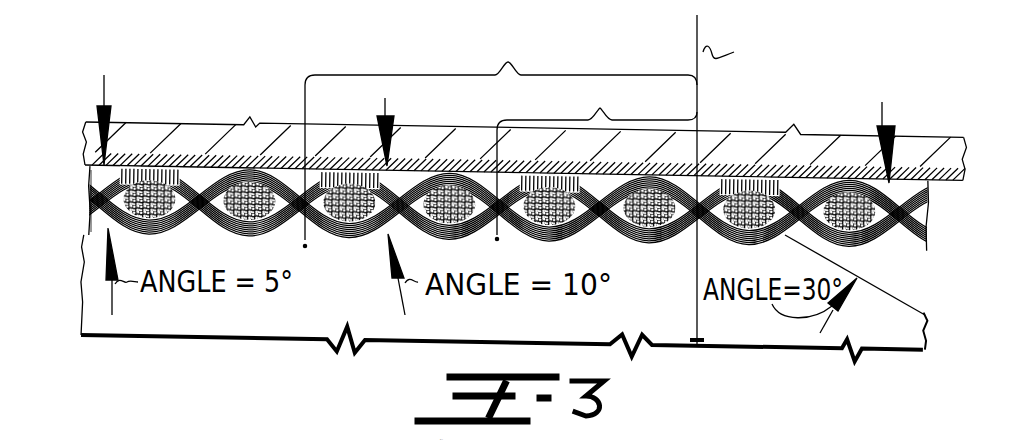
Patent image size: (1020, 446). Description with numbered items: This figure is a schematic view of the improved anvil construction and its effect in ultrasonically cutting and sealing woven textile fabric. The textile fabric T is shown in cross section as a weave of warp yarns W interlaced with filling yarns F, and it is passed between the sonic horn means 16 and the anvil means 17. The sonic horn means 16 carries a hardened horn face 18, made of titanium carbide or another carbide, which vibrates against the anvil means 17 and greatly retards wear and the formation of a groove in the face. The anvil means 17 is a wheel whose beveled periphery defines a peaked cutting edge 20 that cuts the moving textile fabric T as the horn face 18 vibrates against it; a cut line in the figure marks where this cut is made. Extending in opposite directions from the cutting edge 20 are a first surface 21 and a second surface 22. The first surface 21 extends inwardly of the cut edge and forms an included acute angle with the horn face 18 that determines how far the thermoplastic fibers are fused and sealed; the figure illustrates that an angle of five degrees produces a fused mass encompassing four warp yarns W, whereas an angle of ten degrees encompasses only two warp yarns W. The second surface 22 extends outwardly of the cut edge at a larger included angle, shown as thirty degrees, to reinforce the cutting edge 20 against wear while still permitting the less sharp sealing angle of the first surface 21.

The sonic horn means 16 is at (218, 88).
The anvil means 17 is at (692, 372).
The hardened horn face 18 is at (172, 160).
The peaked cutting edge 20 is at (695, 306).
The first surface 21 is at (265, 322).
The second surface 22 is at (864, 280).
The woven textile fabric T is at (92, 193).
The filling yarns F is at (242, 230).
The warp yarns W is at (356, 236).